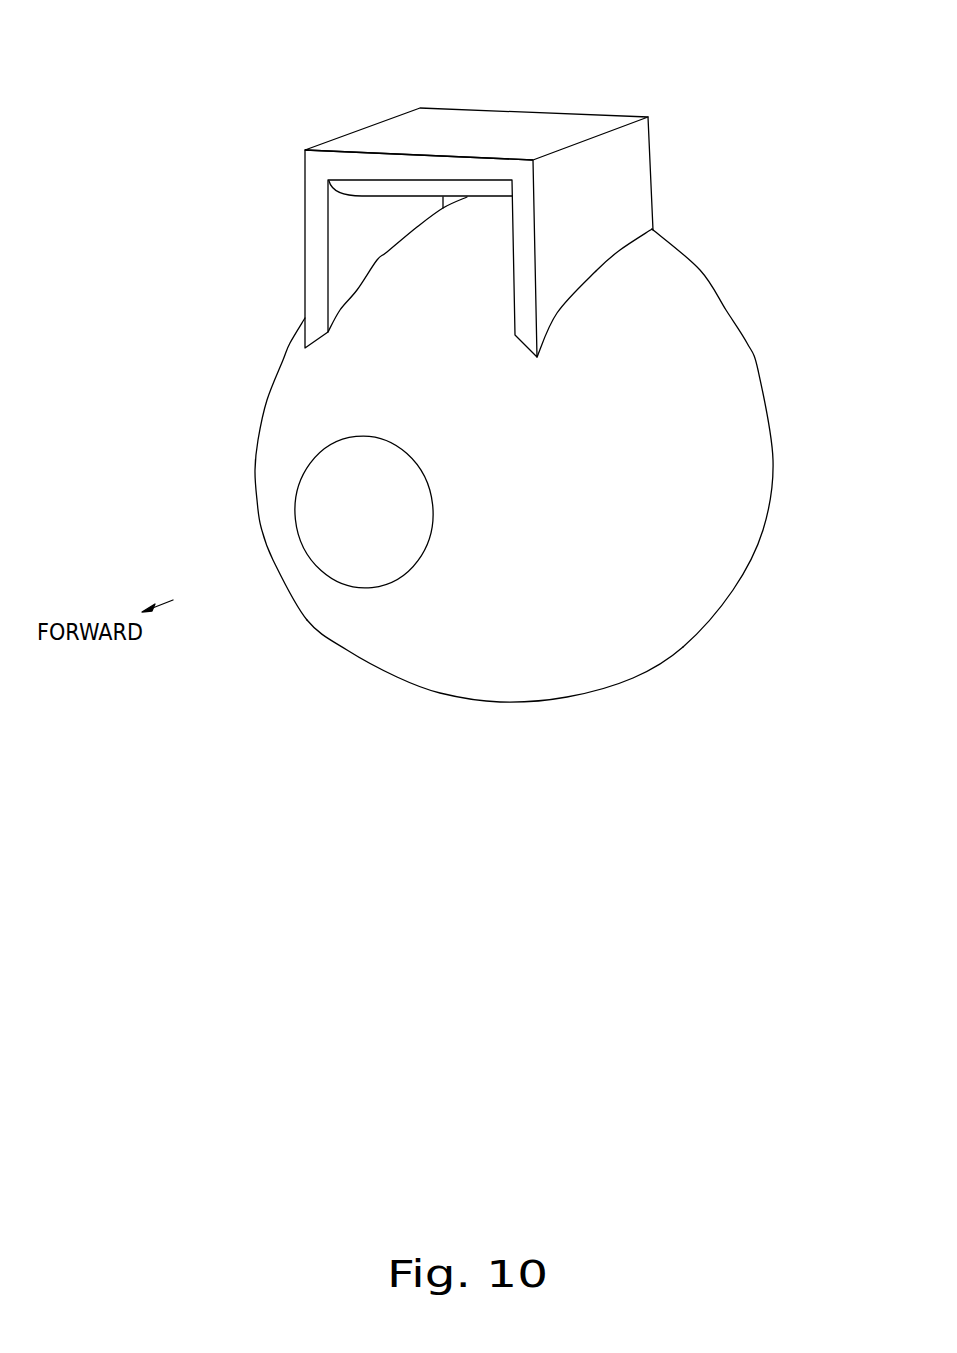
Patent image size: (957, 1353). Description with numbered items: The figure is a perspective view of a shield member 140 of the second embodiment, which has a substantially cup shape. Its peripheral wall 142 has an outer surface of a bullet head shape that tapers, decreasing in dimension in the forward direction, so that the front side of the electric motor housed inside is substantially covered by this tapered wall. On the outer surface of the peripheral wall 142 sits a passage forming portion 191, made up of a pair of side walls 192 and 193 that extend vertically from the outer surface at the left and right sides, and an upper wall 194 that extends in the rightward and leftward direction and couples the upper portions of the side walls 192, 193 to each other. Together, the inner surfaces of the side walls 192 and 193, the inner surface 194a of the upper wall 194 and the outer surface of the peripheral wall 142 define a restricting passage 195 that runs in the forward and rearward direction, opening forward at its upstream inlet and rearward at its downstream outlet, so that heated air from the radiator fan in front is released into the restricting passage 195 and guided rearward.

The shield member 140 is at (718, 357).
The peripheral wall 142 is at (407, 665).
The passage forming portion 191 is at (485, 189).
The side wall 192 is at (307, 205).
The side wall 193 is at (615, 166).
The upper wall 194 is at (542, 128).
The inner surface of upper wall 194a is at (397, 190).
The restricting passage 195 is at (428, 237).